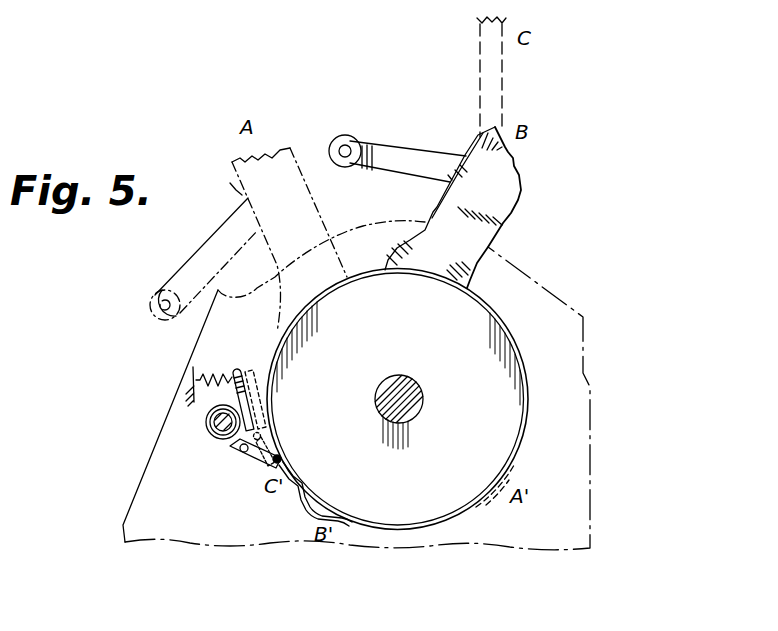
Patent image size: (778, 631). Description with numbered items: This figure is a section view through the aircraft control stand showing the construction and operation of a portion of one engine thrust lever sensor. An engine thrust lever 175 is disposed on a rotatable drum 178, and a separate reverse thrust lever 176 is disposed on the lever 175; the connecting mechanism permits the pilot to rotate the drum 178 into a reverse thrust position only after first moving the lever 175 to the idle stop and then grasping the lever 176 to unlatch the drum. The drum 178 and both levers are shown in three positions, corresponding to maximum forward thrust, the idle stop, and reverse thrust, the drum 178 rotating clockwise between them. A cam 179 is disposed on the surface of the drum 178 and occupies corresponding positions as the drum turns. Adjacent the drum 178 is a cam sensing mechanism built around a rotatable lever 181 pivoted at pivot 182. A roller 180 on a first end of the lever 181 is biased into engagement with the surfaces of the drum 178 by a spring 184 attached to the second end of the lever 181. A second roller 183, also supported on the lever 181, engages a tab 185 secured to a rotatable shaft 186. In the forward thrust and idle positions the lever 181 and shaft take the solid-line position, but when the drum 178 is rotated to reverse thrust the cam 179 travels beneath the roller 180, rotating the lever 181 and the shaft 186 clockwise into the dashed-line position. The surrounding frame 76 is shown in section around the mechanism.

The frame 76 is at (591, 387).
The engine thrust lever 175 is at (432, 213).
The reverse thrust lever 176 is at (390, 153).
The rotatable drum 178 is at (522, 443).
The cam 179 is at (313, 512).
The roller 180 is at (277, 460).
The rotatable lever 181 is at (260, 440).
The pivot 182 is at (253, 435).
The second roller 183 is at (237, 452).
The spring 184 is at (193, 367).
The tab 185 is at (237, 448).
The rotatable shaft 186 is at (207, 420).